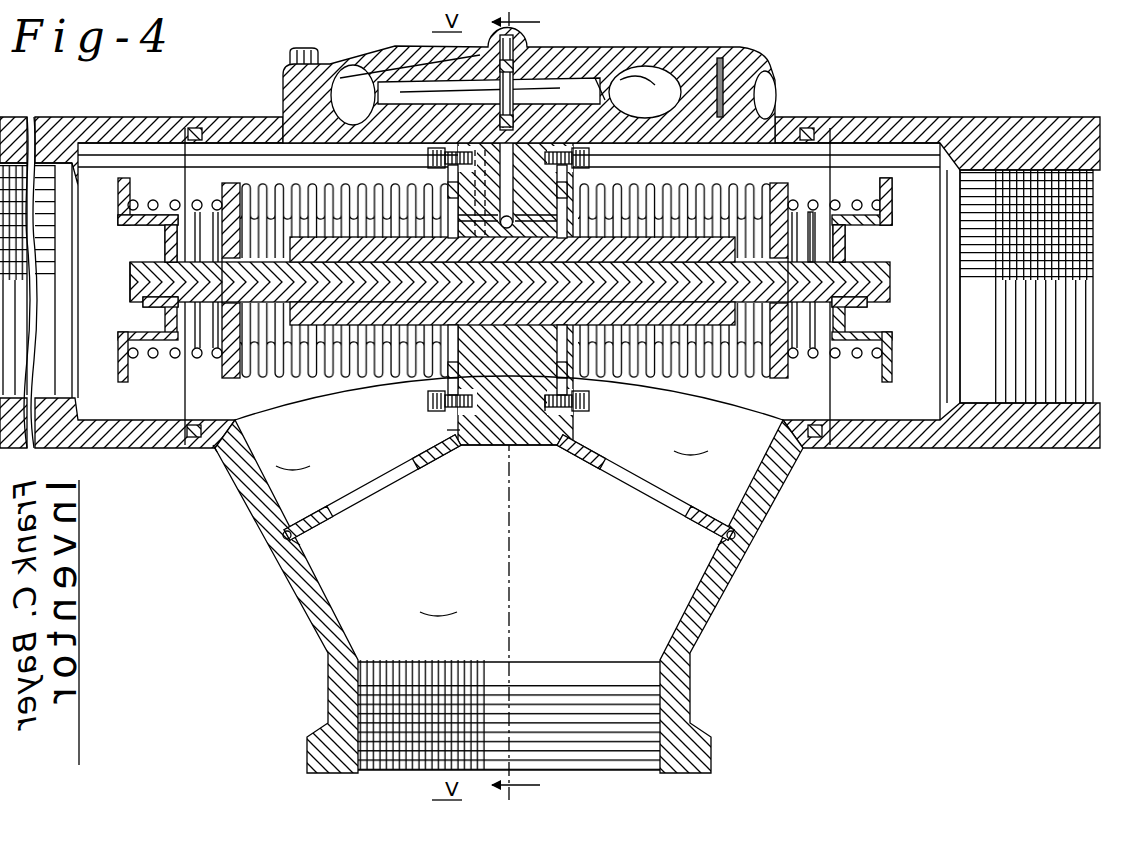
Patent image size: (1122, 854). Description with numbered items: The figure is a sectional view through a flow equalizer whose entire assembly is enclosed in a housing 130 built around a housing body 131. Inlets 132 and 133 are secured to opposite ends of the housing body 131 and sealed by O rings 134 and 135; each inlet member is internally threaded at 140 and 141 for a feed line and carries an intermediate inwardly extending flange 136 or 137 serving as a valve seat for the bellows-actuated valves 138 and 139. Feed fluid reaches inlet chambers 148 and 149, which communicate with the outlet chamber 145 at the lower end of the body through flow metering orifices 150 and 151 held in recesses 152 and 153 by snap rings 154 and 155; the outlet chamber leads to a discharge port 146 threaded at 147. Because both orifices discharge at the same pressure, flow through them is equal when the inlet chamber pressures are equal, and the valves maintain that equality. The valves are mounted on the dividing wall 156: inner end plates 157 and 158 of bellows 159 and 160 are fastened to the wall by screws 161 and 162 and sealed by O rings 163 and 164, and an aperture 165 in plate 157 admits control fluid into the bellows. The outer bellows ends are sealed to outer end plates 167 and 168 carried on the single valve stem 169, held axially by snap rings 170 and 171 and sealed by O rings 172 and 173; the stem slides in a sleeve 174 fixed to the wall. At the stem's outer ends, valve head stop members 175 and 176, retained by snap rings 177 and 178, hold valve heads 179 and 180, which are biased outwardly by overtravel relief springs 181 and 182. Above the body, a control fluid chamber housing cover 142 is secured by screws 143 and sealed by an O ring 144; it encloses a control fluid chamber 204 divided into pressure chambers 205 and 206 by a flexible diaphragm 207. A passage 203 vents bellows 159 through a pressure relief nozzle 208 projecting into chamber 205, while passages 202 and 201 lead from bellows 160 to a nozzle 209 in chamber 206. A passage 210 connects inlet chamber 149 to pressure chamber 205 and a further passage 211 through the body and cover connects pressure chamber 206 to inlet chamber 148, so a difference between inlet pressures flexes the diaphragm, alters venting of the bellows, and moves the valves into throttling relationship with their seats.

The housing 130 is at (202, 465).
The housing body 131 is at (240, 472).
The inlet 132 is at (942, 445).
The inlet 133 is at (100, 440).
The O ring 134 is at (810, 128).
The O ring 135 is at (198, 128).
The inwardly extending flange 136 is at (948, 165).
The inwardly extending flange 137 is at (68, 170).
The bellows-actuated valve 138 is at (822, 357).
The bellows-actuated valve 139 is at (212, 362).
The internal threads 140 is at (1035, 175).
The internal threads 141 is at (15, 190).
The control fluid chamber housing cover 142 is at (722, 60).
The screws 143 is at (303, 50).
The O ring 144 is at (310, 97).
The outlet chamber 145 is at (437, 600).
The outlet port 146 is at (688, 712).
The internal threads 147 is at (365, 695).
The inlet chamber 148 is at (690, 439).
The inlet chamber 149 is at (292, 454).
The flow metering orifice 150 is at (625, 490).
The flow metering orifice 151 is at (402, 488).
The recess 152 is at (742, 534).
The recess 153 is at (284, 534).
The snap ring 154 is at (718, 538).
The snap ring 155 is at (302, 543).
The dividing wall 156 is at (513, 420).
The inner end plate 157 is at (572, 410).
The inner end plate 158 is at (445, 408).
The bellows 159 is at (740, 382).
The bellows 160 is at (296, 386).
The screw 161 is at (598, 426).
The screw 162 is at (447, 335).
The O ring 163 is at (520, 430).
The O ring 164 is at (458, 430).
The aperture 165 is at (567, 340).
The outer end plate 167 is at (780, 372).
The outer end plate 168 is at (226, 372).
The valve stem 169 is at (345, 285).
The snap ring 170 is at (797, 225).
The snap ring 171 is at (210, 212).
The O ring 172 is at (780, 205).
The O ring 173 is at (190, 265).
The sleeve 174 is at (492, 442).
The valve head stop member 175 is at (868, 305).
The valve head stop member 176 is at (150, 304).
The snap ring 177 is at (868, 258).
The snap ring 178 is at (130, 265).
The valve head 179 is at (888, 220).
The valve head 180 is at (122, 218).
The overtravel relief spring 181 is at (833, 200).
The overtravel relief spring 182 is at (153, 200).
The passage 201 is at (516, 50).
The passage 202 is at (455, 218).
The passage 203 is at (510, 152).
The control fluid chamber 204 is at (652, 80).
The pressure chamber 205 is at (440, 98).
The pressure chamber 206 is at (400, 62).
The flexible diaphragm 207 is at (605, 95).
The pressure relief nozzle 208 is at (542, 91).
The pressure relief nozzle 209 is at (520, 64).
The passage 210 is at (345, 125).
The passage 211 is at (752, 98).